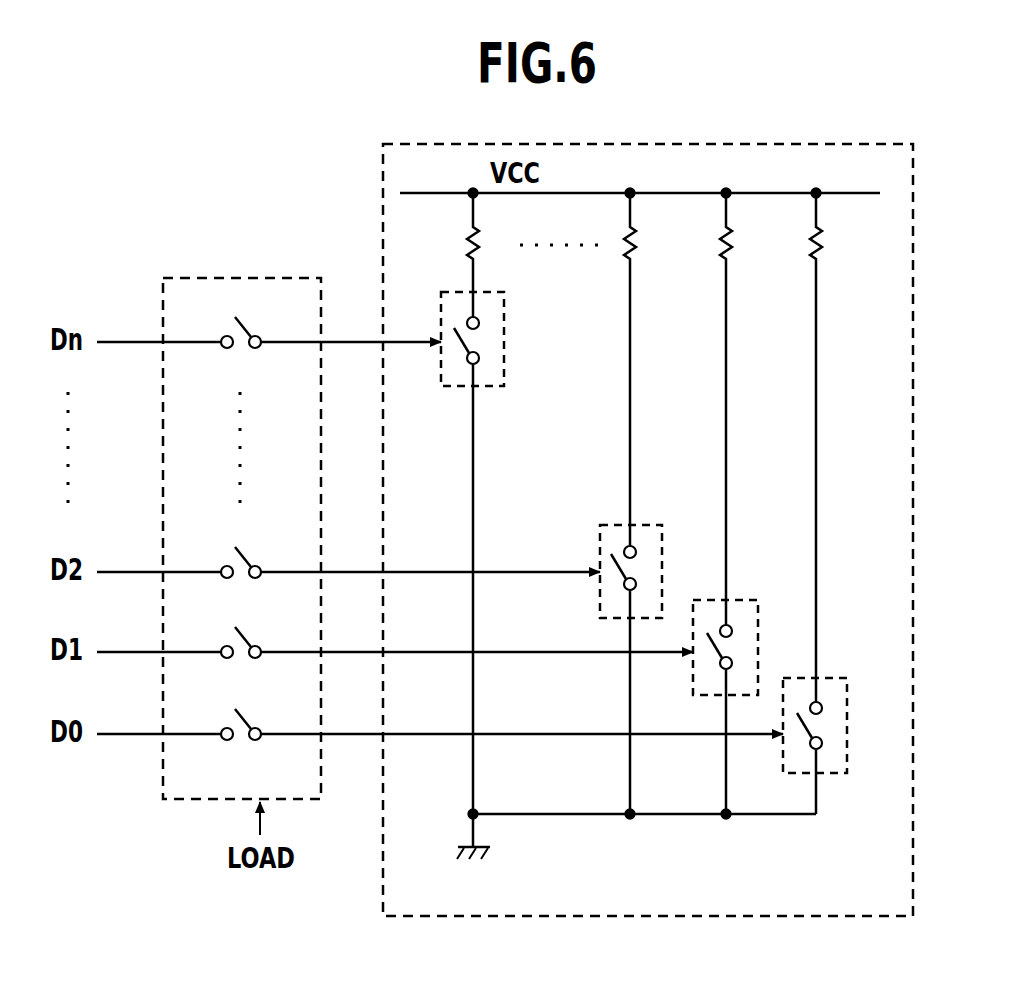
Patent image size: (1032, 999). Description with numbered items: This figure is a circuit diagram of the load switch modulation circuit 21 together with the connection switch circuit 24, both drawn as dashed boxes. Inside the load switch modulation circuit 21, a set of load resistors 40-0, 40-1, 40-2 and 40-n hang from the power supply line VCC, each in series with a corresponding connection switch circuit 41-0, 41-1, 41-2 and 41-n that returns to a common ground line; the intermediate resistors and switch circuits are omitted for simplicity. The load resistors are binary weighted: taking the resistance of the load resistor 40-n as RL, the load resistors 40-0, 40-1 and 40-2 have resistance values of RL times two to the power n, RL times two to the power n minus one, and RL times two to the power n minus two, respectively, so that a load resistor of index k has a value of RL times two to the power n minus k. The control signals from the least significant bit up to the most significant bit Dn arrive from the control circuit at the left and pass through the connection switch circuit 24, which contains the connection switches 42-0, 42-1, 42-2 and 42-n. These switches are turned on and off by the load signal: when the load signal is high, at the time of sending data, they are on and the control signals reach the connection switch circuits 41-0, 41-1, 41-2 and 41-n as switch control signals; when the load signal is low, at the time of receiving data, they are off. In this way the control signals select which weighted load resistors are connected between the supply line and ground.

The load switch modulation circuit 21 is at (525, 916).
The connection switch circuit 24 is at (240, 275).
The load resistor 40-n is at (483, 246).
The load resistor 40-2 is at (638, 245).
The load resistor 40-1 is at (733, 245).
The load resistor 40-0 is at (823, 245).
The connection switch circuit 41-n is at (490, 387).
The connection switch circuit 41-2 is at (645, 525).
The connection switch circuit 41-1 is at (742, 600).
The connection switch circuit 41-0 is at (833, 678).
The connection switch 42-n is at (269, 325).
The connection switch 42-2 is at (348, 555).
The connection switch 42-1 is at (395, 635).
The connection switch 42-0 is at (440, 717).